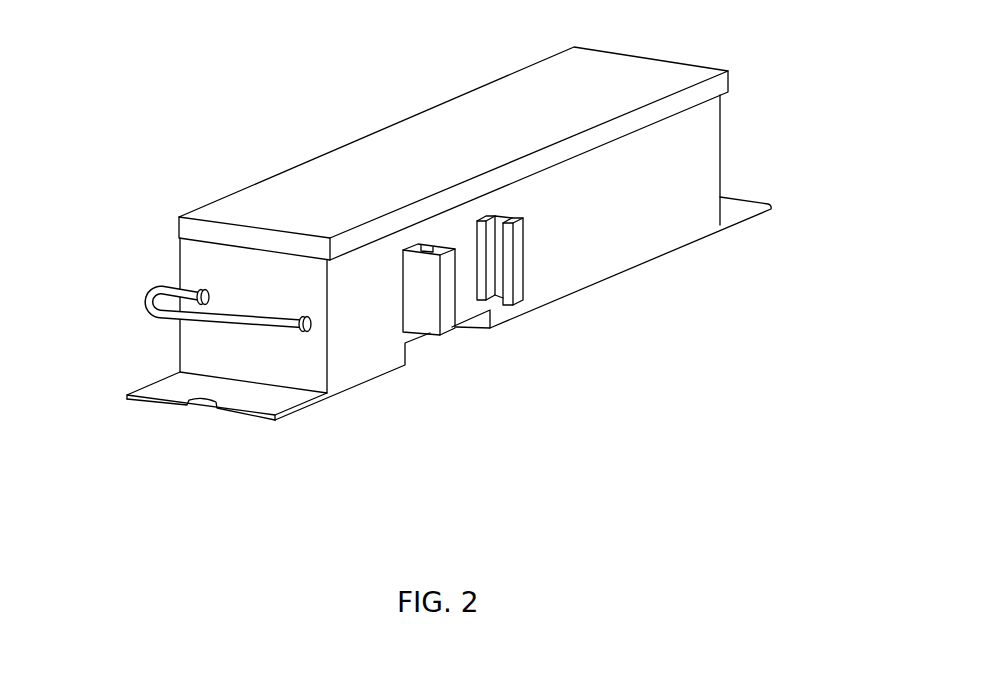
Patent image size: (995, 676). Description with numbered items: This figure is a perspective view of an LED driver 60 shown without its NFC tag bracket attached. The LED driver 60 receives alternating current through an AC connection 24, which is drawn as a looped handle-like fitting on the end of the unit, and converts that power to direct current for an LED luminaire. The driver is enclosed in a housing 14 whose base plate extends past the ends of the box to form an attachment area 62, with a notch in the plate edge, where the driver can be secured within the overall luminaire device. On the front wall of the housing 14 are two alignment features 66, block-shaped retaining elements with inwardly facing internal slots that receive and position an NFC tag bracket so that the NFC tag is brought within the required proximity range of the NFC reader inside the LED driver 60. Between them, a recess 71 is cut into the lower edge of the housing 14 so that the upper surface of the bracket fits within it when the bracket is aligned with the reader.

The housing 14 is at (685, 63).
The LED driver 60 is at (297, 105).
The AC connection 24 is at (173, 320).
The attachment area 62 is at (217, 409).
The alignment feature 66 is at (422, 320).
The recess 71 is at (425, 350).